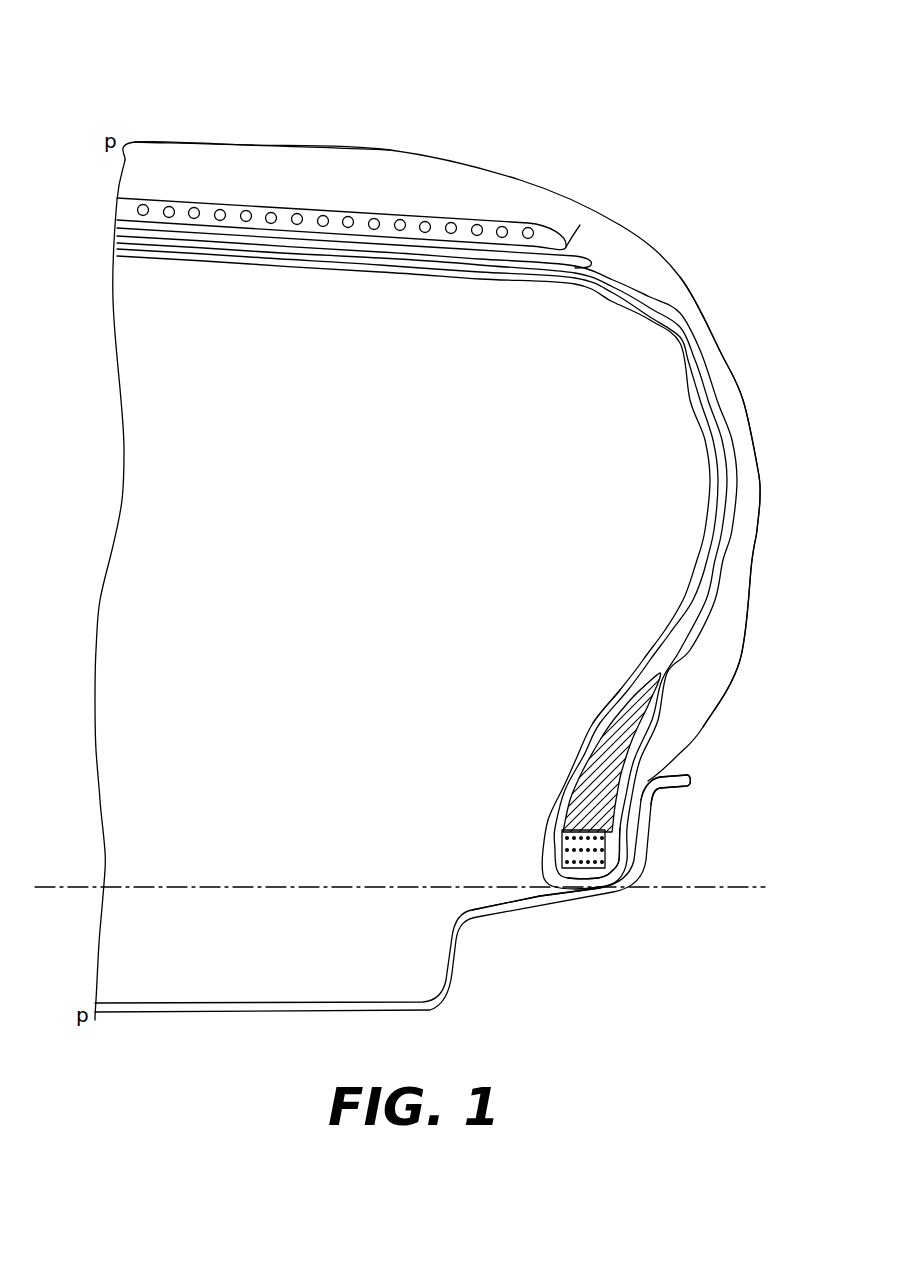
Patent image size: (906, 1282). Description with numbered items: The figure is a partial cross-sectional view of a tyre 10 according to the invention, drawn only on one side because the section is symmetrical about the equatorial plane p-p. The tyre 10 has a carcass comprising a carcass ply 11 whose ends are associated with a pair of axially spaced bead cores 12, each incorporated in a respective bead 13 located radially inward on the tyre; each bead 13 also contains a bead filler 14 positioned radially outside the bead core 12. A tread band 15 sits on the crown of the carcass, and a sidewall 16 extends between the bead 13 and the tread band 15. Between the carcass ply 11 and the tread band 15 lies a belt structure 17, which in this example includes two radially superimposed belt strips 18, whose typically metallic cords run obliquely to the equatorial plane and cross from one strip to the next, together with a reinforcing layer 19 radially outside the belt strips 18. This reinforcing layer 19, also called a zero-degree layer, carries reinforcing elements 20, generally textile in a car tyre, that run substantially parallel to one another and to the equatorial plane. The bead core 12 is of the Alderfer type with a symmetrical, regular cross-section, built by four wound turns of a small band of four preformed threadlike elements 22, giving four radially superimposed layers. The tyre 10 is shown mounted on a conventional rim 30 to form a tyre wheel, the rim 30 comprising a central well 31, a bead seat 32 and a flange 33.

The tyre 10 is at (60, 108).
The carcass ply 11 is at (317, 260).
The bead core 12 is at (565, 832).
The bead 13 is at (572, 732).
The bead filler 14 is at (643, 717).
The tread band 15 is at (205, 158).
The sidewall 16 is at (735, 407).
The belt structure 17 is at (590, 212).
The belt strips 18 is at (190, 225).
The reinforcing layer 19 is at (410, 217).
The reinforcing elements 20 is at (353, 212).
The threadlike elements 22 is at (603, 837).
The rim 30 is at (480, 957).
The central well 31 is at (218, 920).
The bead seat 32 is at (593, 896).
The flange 33 is at (690, 779).